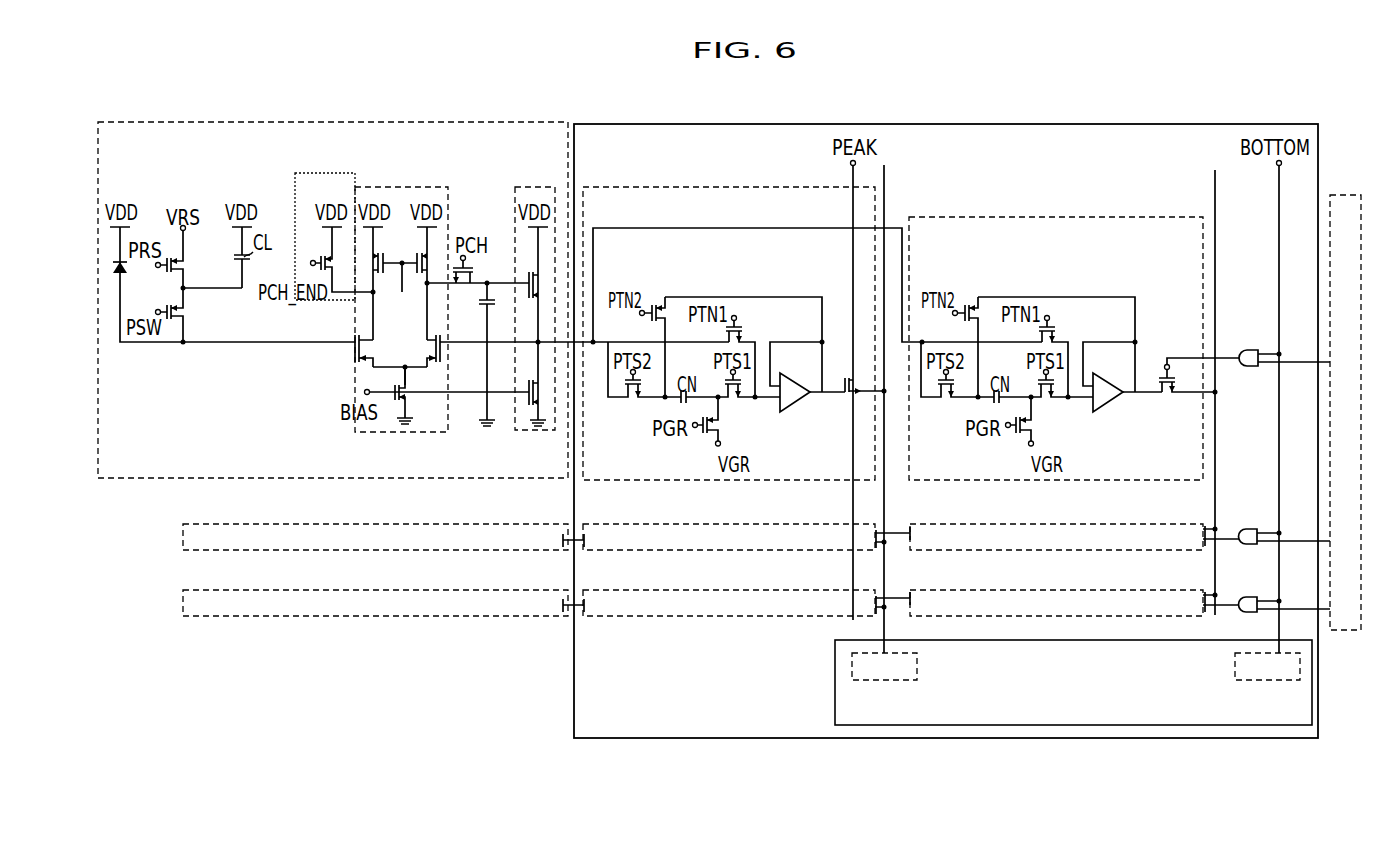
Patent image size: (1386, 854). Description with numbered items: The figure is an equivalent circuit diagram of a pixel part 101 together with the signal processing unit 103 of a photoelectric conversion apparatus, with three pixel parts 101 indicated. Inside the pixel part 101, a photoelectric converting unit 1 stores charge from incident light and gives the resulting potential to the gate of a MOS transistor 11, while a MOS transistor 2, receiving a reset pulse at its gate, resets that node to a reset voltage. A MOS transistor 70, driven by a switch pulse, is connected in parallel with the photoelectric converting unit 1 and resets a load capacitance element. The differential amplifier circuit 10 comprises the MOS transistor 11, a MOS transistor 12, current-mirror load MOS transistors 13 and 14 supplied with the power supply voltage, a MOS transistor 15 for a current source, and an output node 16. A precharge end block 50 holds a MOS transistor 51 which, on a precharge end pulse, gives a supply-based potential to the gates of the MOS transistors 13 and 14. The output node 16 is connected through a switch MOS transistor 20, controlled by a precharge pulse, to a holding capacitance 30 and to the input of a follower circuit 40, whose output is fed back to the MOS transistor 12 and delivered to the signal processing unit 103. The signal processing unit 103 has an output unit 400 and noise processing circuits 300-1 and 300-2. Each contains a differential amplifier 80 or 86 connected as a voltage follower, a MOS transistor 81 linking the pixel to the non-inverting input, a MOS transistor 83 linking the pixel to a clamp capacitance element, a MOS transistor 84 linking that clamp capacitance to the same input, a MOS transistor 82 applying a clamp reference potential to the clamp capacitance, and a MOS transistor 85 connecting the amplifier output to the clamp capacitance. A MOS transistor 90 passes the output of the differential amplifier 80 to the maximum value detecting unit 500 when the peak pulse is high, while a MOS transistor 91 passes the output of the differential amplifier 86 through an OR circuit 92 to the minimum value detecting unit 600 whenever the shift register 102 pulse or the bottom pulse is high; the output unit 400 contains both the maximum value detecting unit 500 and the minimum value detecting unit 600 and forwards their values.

The photoelectric converting unit 1 is at (123, 268).
The MOS transistor 2 is at (186, 266).
The MOS transistor 70 is at (183, 313).
The precharge end circuit 50 is at (325, 173).
The MOS transistor 51 is at (318, 258).
The differential amplifier circuit 10 is at (399, 187).
The MOS transistor 11 is at (352, 344).
The MOS transistor 12 is at (425, 346).
The MOS transistor 13 is at (384, 256).
The MOS transistor 14 is at (409, 282).
The MOS transistor for a current source 15 is at (400, 413).
The output node 16 is at (430, 283).
The switch MOS transistor 20 is at (477, 268).
The capacitor 30 is at (487, 303).
The follower circuit 40 is at (531, 187).
The pixel part 101 is at (478, 122).
The shift register 102 is at (1348, 195).
The signal processing unit 103 is at (574, 684).
The noise processing circuit 300-1 is at (718, 187).
The noise processing circuit 300-2 is at (1062, 217).
The differential amplifier 80 is at (793, 403).
The MOS transistor 81 is at (744, 326).
The MOS transistor 82 is at (703, 436).
The MOS transistor 83 is at (634, 398).
The MOS transistor 84 is at (738, 398).
The MOS transistor 85 is at (665, 310).
The differential amplifier 86 is at (1106, 403).
The MOS transistor 90 is at (851, 397).
The MOS transistor 91 is at (1167, 394).
The OR circuit 92 is at (1244, 368).
The output unit 400 is at (835, 688).
The maximum value detecting unit 500 is at (918, 668).
The minimum value detecting unit 600 is at (1234, 668).